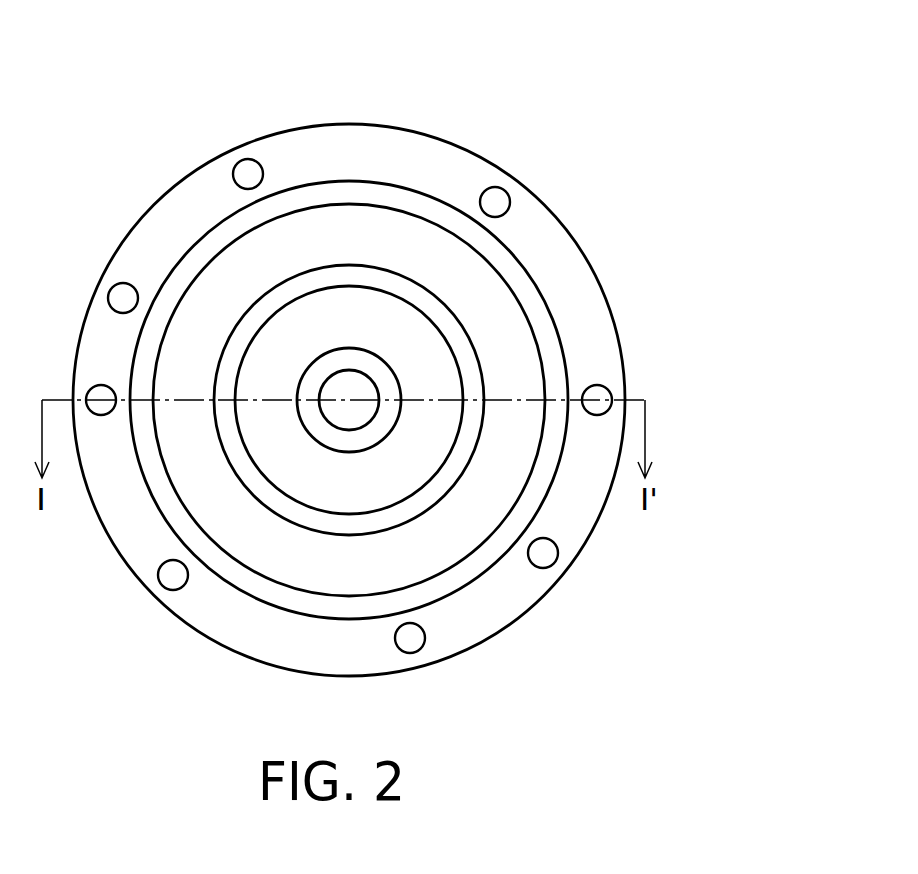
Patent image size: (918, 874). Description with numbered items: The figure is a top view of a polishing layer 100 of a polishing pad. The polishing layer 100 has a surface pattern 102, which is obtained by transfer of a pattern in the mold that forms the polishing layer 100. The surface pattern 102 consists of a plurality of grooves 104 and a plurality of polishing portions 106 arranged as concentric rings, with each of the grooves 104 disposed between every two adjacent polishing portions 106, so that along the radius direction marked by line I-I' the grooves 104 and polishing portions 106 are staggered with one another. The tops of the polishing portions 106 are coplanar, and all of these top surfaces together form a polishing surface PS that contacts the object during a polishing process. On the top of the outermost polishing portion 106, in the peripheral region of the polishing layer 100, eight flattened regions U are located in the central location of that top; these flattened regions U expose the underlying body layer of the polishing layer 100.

The polishing layer 100 is at (745, 690).
The surface pattern 102 is at (748, 62).
The grooves 104 is at (392, 368).
The polishing portions 106 is at (353, 383).
The polishing surface PS is at (390, 150).
The flattened regions U is at (608, 392).